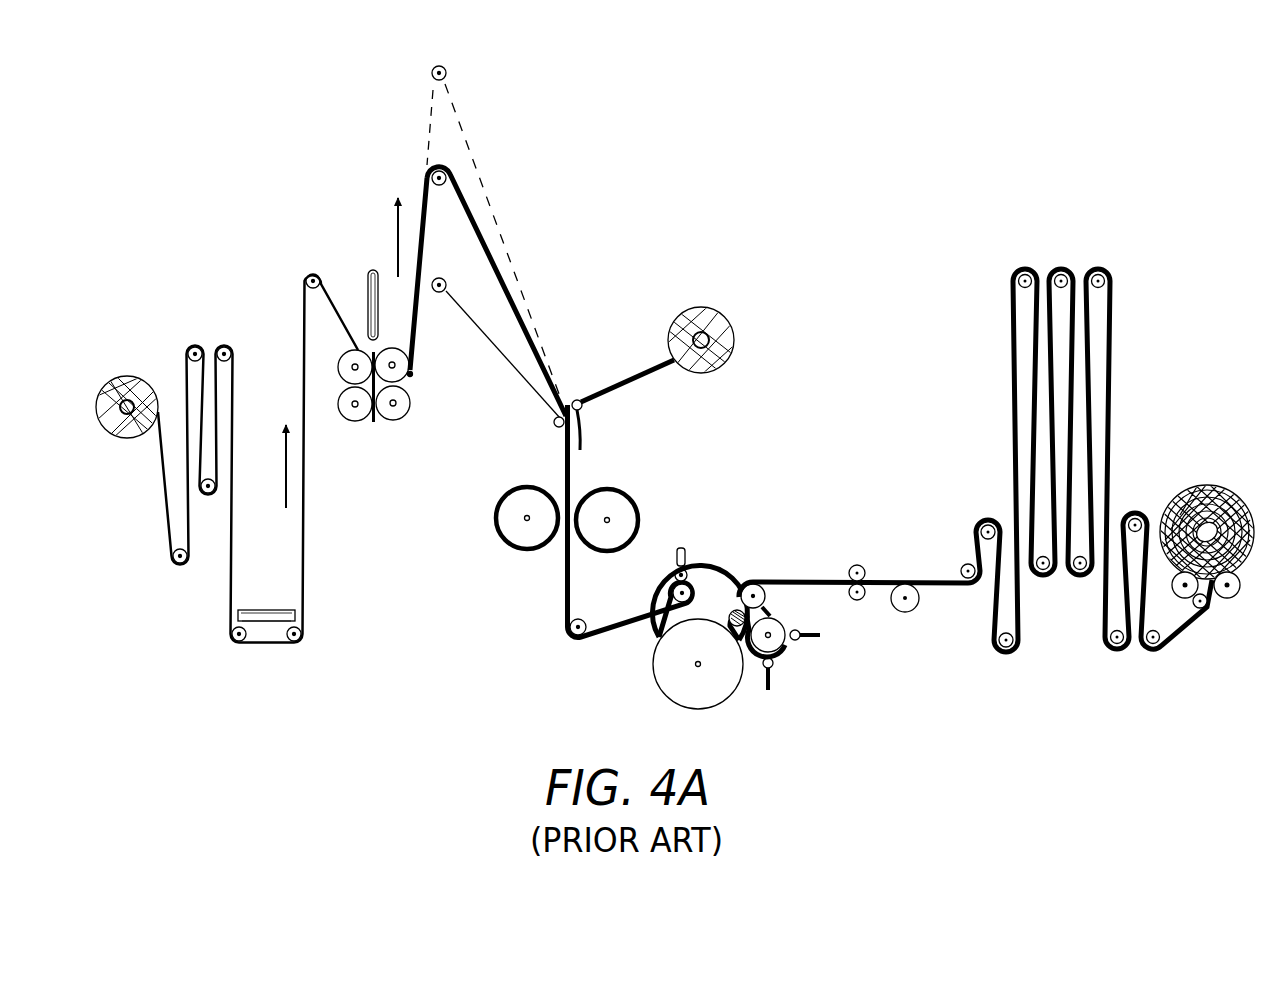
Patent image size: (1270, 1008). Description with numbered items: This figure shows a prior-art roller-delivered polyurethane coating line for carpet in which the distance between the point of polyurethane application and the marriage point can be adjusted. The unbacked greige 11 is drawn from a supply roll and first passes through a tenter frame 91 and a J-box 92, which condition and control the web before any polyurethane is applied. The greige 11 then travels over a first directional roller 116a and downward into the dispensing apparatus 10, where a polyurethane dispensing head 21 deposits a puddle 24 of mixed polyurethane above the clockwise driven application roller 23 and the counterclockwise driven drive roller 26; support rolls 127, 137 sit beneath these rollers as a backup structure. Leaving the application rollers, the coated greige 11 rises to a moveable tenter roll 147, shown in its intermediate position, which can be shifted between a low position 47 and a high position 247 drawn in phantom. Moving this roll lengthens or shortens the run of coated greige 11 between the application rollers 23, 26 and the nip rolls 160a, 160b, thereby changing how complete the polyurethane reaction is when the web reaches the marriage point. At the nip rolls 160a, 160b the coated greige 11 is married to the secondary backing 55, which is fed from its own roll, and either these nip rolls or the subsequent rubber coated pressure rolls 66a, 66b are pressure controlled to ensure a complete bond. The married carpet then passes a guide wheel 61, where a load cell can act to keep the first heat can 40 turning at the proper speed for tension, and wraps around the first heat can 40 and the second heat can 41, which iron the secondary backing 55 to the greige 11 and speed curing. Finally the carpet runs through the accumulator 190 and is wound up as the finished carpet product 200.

The greige 11 is at (157, 376).
The tenter frame 91 is at (207, 334).
The J-box 92 is at (254, 600).
The first directional roller 116a is at (309, 274).
The polyurethane dispensing head 21 is at (375, 267).
The puddle 24 is at (378, 353).
The application roller 23 is at (343, 356).
The support roll 137 is at (356, 423).
The support roll 127 is at (395, 421).
The drive roller 26 is at (413, 376).
The dispensing apparatus 10 is at (388, 520).
The low position 47 is at (441, 293).
The high position 247 is at (447, 82).
The moveable tenter roll 147 is at (458, 196).
The secondary backing 55 is at (697, 303).
The nip roll 160a is at (583, 405).
The nip roll 160b is at (553, 423).
The rubber coated pressure roll 66a is at (634, 493).
The rubber coated pressure roll 66b is at (509, 548).
The guide wheel 61 is at (667, 608).
The first heat can 40 is at (662, 705).
The second heat can 41 is at (787, 655).
The accumulator 190 is at (1045, 252).
The finished carpet product 200 is at (1210, 480).